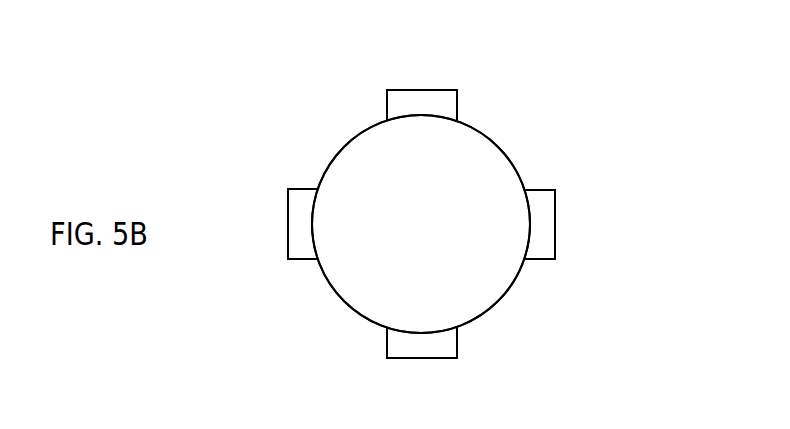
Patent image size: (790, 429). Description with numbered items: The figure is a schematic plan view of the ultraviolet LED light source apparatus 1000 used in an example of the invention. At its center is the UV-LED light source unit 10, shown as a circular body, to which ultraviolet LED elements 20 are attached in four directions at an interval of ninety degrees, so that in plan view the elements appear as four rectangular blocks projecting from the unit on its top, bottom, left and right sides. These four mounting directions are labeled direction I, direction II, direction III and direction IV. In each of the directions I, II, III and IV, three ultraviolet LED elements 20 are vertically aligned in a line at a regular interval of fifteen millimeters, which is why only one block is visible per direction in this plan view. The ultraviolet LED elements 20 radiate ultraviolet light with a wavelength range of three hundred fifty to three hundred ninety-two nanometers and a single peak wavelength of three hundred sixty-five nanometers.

The ultraviolet LED light source apparatus 1000 is at (534, 104).
The UV-LED light source unit 10 is at (500, 300).
The ultraviolet LED element 20 is at (407, 90).
The direction I is at (556, 235).
The direction II is at (410, 358).
The direction III is at (288, 218).
The direction IV is at (428, 90).